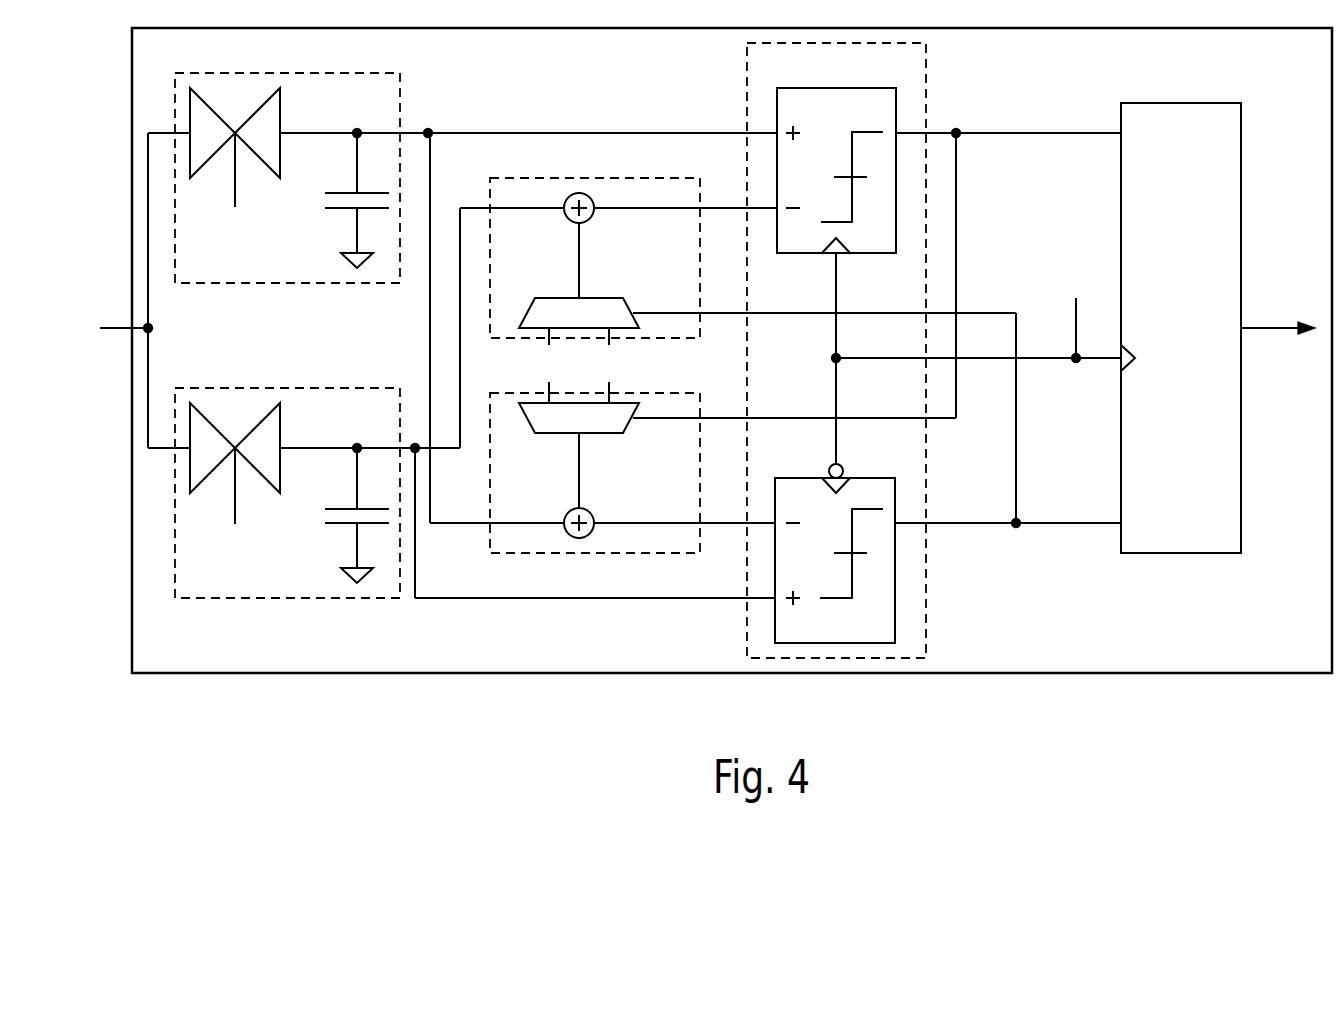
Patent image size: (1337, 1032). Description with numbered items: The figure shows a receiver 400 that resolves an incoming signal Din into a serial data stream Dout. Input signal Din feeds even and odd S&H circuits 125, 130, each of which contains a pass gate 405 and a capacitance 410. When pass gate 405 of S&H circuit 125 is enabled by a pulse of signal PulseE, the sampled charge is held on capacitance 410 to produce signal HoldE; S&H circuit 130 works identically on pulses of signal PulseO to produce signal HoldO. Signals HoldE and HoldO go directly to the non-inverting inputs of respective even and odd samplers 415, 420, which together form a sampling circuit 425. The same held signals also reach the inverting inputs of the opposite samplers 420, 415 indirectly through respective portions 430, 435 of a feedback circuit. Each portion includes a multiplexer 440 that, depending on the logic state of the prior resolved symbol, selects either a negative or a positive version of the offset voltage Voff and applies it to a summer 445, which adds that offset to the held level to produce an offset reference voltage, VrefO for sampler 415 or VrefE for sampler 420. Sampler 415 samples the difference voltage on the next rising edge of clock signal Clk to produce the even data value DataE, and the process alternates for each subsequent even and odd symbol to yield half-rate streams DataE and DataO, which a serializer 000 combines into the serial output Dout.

The receiver 400 is at (1322, 661).
The even S&H circuit 125 is at (217, 270).
The odd S&H circuit 130 is at (217, 585).
The pass gate 405 is at (281, 146).
The capacitance 410 is at (325, 209).
The even sampler 415 is at (852, 123).
The odd sampler 420 is at (852, 630).
The sampling circuit 425 is at (916, 76).
The feedback circuit portion 430 is at (530, 501).
The feedback circuit portion 435 is at (530, 286).
The multiplexer 440 is at (593, 298).
The summer 445 is at (590, 218).
The serializer 000 is at (1198, 353).